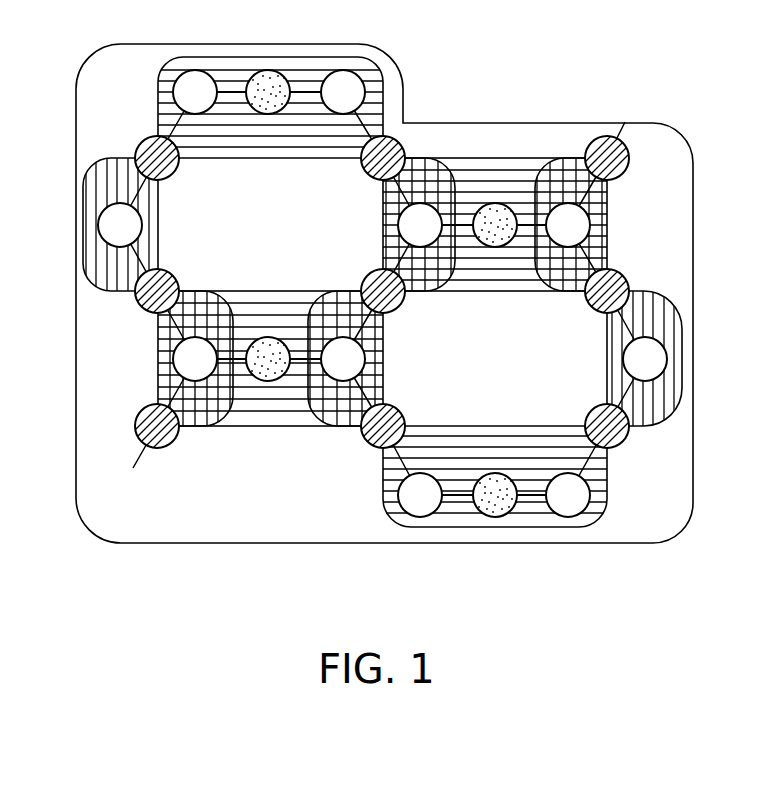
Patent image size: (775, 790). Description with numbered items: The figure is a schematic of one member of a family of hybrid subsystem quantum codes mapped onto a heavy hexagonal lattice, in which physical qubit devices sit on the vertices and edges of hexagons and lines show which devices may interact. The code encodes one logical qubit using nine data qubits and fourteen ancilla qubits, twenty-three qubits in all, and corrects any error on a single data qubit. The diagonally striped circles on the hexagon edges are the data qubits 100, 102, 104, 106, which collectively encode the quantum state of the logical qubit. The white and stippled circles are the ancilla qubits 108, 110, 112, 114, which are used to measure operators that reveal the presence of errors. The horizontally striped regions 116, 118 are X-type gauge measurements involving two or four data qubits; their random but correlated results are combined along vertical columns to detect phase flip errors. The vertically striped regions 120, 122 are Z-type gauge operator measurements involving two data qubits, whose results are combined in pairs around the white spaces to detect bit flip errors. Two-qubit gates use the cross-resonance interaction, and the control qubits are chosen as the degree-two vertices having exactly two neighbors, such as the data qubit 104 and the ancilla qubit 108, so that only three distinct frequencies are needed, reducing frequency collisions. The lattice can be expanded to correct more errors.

The data qubit 100 is at (395, 138).
The data qubit 102 is at (630, 162).
The data qubit 104 is at (394, 308).
The data qubit 106 is at (625, 276).
The ancilla qubit 108 is at (497, 203).
The ancilla qubit 110 is at (492, 518).
The ancilla qubit 112 is at (424, 204).
The ancilla qubit 114 is at (605, 220).
The X-type gauge measurement region 116 is at (530, 262).
The X-type gauge measurement region 118 is at (473, 426).
The Z-type gauge operator measurement region 120 is at (607, 197).
The Z-type gauge operator measurement region 122 is at (683, 357).